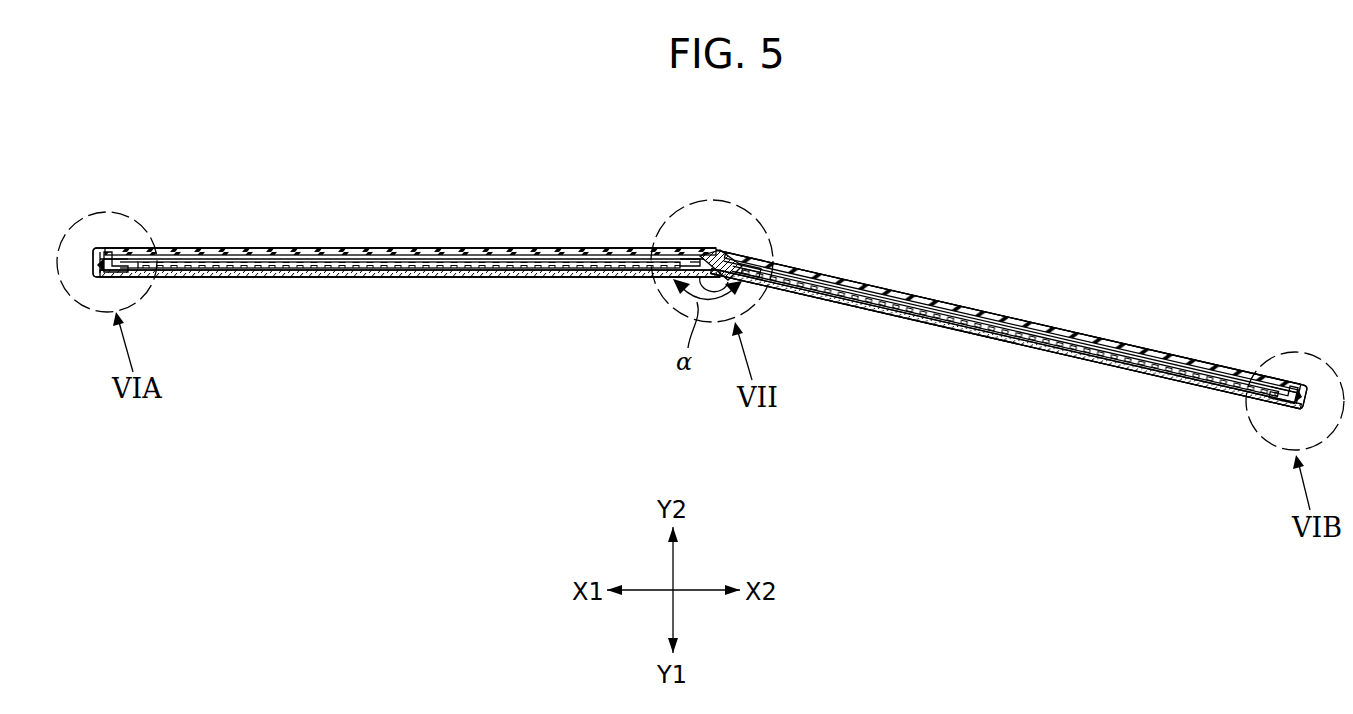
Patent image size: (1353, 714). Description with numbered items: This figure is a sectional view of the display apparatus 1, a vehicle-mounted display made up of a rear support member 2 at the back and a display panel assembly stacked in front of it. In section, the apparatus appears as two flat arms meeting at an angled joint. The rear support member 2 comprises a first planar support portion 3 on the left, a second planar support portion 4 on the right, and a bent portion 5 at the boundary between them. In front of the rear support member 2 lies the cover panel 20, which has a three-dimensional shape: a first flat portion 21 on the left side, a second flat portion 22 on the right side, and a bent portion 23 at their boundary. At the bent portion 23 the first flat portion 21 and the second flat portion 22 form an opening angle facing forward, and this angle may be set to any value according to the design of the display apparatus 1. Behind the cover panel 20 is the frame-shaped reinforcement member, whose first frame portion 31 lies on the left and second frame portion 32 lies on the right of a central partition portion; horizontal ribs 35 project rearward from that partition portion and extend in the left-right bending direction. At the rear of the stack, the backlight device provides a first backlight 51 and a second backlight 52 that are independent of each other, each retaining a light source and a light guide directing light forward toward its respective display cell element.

The display apparatus 1 is at (1145, 290).
The rear support member 2 is at (816, 272).
The first planar support portion 3 is at (452, 248).
The second planar support portion 4 is at (1056, 328).
The bent portion 5 is at (720, 250).
The cover panel 20 is at (560, 278).
The first flat portion 21 is at (393, 278).
The second flat portion 22 is at (1110, 366).
The bent portion 23 is at (748, 252).
The first frame portion 31 is at (123, 250).
The second frame portion 32 is at (1290, 386).
The horizontal ribs 35 is at (680, 250).
The first backlight 51 is at (358, 248).
The second backlight 52 is at (968, 316).